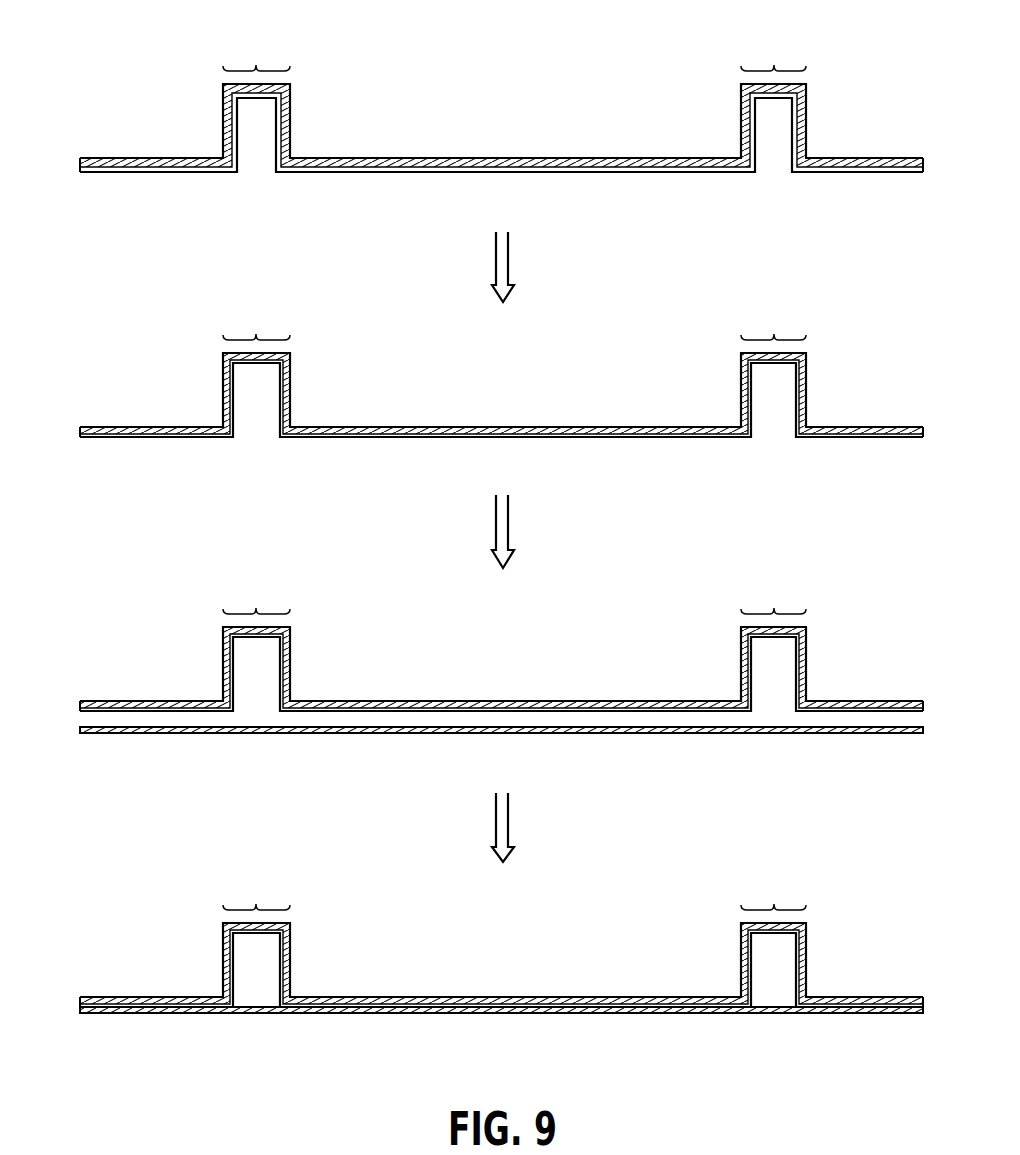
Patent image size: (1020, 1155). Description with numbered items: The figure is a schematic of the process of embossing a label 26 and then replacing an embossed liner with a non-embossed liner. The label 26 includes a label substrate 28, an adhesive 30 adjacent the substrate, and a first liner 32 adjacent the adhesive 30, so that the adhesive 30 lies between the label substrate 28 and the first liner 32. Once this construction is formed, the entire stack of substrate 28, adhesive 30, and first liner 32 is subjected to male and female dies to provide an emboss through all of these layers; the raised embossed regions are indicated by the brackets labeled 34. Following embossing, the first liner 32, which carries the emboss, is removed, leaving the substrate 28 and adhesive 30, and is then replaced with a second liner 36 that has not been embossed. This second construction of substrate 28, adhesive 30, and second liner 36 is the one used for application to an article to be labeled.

The label 26 is at (136, 78).
The label substrate 28 is at (80, 159).
The adhesive 30 is at (80, 165).
The first liner 32 is at (80, 172).
The raised feature 34 is at (256, 64).
The second liner 36 is at (80, 730).